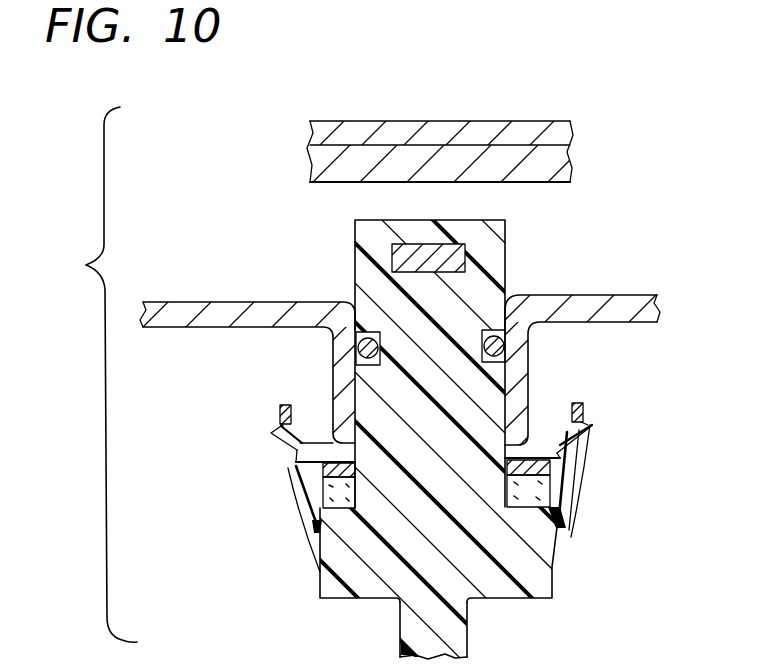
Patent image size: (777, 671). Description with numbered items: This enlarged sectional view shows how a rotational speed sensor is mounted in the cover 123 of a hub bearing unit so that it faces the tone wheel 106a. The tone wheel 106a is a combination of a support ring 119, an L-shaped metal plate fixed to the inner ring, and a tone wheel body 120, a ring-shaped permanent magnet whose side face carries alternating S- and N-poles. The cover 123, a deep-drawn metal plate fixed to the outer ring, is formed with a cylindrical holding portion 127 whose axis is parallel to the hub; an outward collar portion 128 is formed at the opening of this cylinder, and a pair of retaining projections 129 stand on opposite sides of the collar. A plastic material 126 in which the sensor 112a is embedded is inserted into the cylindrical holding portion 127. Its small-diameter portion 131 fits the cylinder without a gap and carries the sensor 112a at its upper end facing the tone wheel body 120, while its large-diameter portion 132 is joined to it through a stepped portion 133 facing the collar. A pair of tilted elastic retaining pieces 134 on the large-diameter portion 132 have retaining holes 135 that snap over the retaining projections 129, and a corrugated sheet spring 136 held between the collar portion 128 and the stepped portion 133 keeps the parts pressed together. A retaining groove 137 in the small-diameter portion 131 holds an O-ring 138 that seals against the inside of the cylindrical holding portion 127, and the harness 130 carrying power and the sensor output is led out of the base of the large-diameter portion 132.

The tone wheel 106a is at (441, 133).
The support ring 119 is at (432, 127).
The tone wheel body 120 is at (350, 170).
The sensor 112a is at (458, 247).
The retaining groove 137 is at (492, 326).
The O-ring 138 is at (354, 326).
The cover 123 is at (227, 337).
The plastic material 126 is at (495, 398).
The small-diameter portion 131 is at (347, 397).
The cylindrical holding portion 127 is at (333, 410).
The collar portion 128 is at (293, 452).
The retaining projection 129 is at (278, 432).
The stepped portion 133 is at (325, 497).
The corrugated sheet spring 136 is at (537, 493).
The elastic retaining piece 134 is at (305, 522).
The retaining hole 135 is at (296, 463).
The large-diameter portion 132 is at (350, 572).
The harness 130 is at (413, 632).